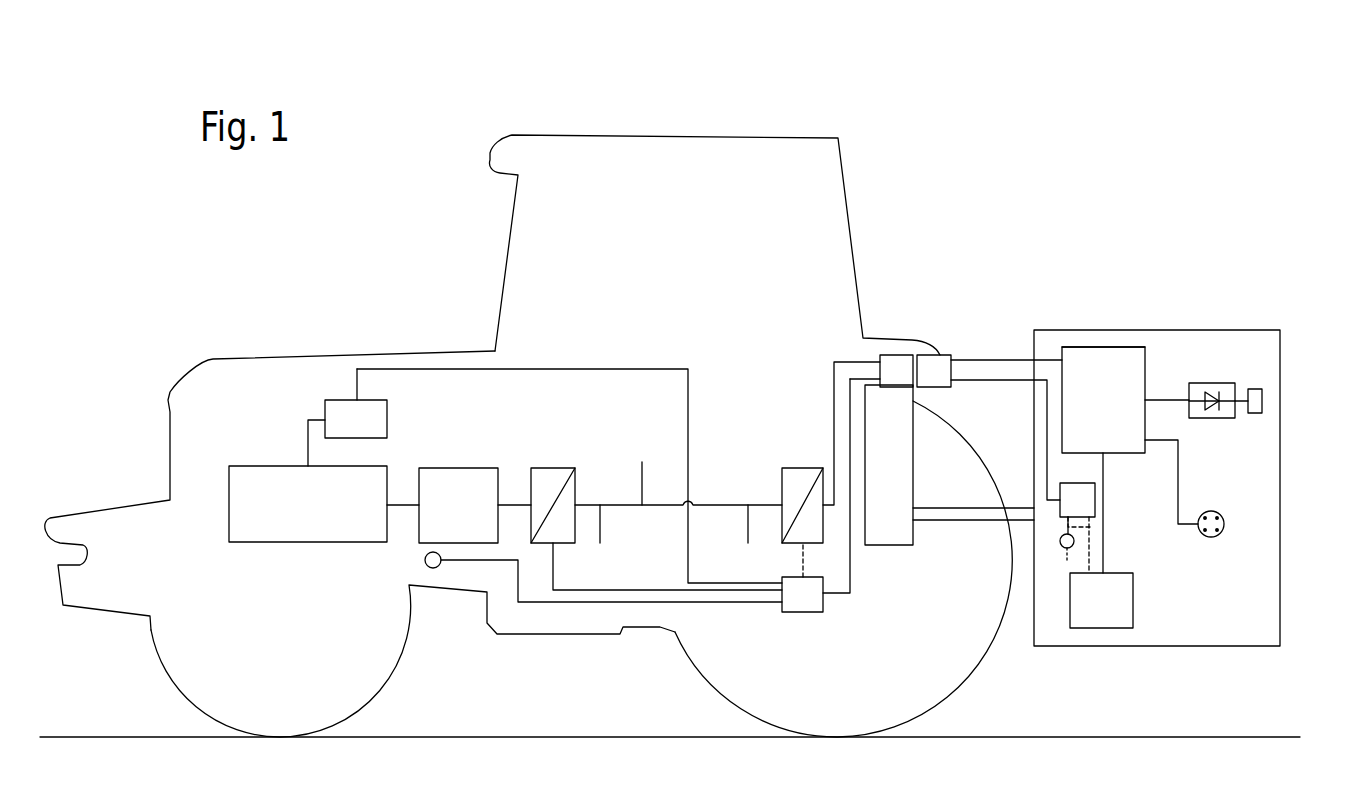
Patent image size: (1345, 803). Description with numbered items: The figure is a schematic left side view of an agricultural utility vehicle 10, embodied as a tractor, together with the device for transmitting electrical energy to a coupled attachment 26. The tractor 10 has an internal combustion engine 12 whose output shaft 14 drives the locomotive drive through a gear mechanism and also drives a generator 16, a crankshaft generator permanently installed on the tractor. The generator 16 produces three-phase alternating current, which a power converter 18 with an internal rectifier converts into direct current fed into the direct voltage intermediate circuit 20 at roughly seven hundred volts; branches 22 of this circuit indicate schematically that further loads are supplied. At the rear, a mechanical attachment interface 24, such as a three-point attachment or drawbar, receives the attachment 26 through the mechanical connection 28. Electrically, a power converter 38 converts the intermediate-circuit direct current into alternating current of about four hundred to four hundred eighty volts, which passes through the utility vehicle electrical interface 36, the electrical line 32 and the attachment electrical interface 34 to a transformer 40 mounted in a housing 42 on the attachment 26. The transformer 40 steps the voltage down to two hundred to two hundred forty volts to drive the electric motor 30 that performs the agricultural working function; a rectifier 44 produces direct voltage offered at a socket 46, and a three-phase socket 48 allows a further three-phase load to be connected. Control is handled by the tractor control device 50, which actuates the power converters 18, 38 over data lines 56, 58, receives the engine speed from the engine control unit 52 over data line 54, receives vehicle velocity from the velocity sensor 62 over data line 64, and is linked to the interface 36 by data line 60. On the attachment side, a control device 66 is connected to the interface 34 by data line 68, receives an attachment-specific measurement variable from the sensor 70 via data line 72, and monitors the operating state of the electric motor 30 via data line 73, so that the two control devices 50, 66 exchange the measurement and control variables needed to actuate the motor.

The agricultural utility vehicle 10 is at (155, 335).
The internal combustion engine 12 is at (308, 504).
The output shaft 14 is at (402, 505).
The generator 16 is at (475, 505).
The power converter 18 is at (555, 468).
The direct voltage intermediate circuit 20 is at (663, 505).
The branches 22 is at (640, 480).
The mechanical attachment interface 24 is at (949, 465).
The attachment 26 is at (1145, 330).
The mechanical connection 28 is at (1030, 513).
The electric motor 30 is at (1101, 600).
The electrical line 32 is at (1016, 360).
The attachment electrical interface 34 is at (952, 357).
The utility vehicle electrical interface 36 is at (893, 355).
The power converter 38 is at (805, 468).
The transformer 40 is at (1130, 460).
The housing 42 is at (1098, 347).
The rectifier 44 is at (1213, 383).
The socket 46 is at (1253, 413).
The three-phase socket 48 is at (1213, 537).
The control device 50 is at (802, 594).
The control unit 52 is at (347, 417).
The data line 54 is at (603, 369).
The data line 56 is at (565, 590).
The data line 58 is at (802, 560).
The data line 60 is at (851, 568).
The velocity sensor 62 is at (440, 568).
The data line 64 is at (544, 603).
The control device 66 is at (1077, 508).
The data line 68 is at (1047, 448).
The sensor 70 is at (1061, 548).
The data line 72 is at (1090, 527).
The data line 73 is at (1092, 545).